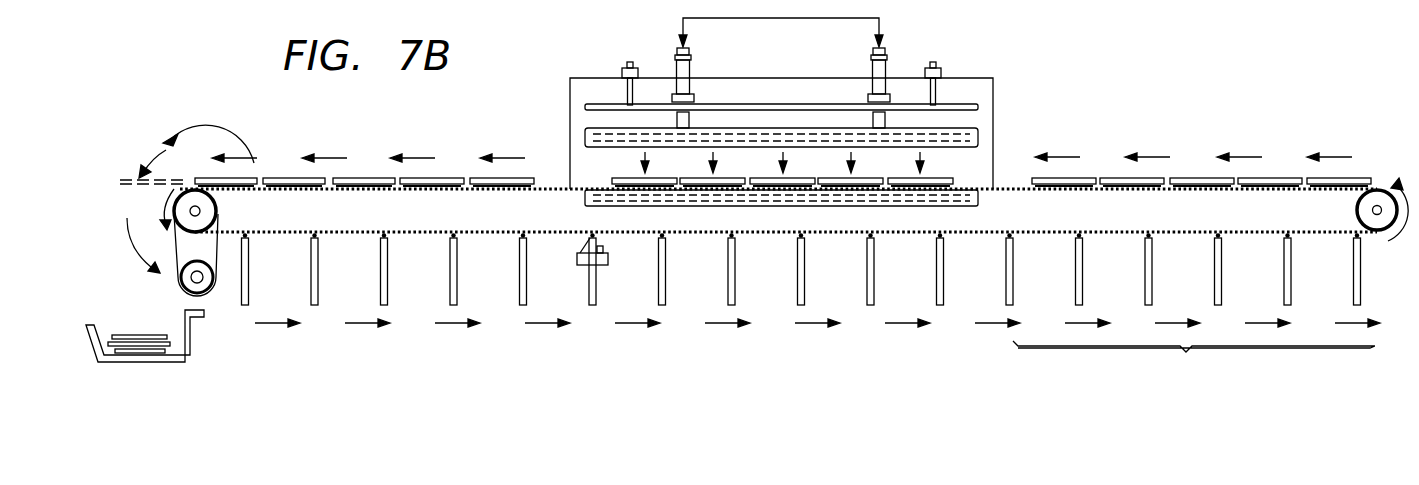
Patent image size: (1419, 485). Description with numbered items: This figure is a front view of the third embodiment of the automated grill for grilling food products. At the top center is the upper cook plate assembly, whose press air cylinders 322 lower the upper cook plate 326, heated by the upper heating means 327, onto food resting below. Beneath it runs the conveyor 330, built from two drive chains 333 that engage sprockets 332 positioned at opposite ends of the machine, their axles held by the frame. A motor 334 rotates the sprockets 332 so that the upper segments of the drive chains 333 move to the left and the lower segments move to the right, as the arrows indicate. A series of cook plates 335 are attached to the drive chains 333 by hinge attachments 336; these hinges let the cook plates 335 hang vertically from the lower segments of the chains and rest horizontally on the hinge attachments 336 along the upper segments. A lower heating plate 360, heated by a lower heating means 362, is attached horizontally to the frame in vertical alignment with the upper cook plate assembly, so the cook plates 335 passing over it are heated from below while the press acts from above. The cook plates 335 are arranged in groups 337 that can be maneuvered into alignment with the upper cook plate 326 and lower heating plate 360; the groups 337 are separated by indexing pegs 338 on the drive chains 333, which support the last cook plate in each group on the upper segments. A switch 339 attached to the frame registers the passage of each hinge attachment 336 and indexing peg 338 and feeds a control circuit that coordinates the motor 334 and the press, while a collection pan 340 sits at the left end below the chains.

The press air cylinders 322 is at (886, 68).
The upper cook plate 326 is at (587, 134).
The upper heating means 327 is at (585, 107).
The conveyor 330 is at (1390, 170).
The sprockets 332 is at (218, 210).
The drive chains 333 is at (975, 236).
The motor 334 is at (182, 281).
The cook plates 335 is at (314, 306).
The hinge attachments 336 is at (446, 242).
The groups 337 is at (1194, 362).
The indexing pegs 338 is at (592, 238).
The switch 339 is at (586, 267).
The collection pan 340 is at (191, 346).
The lower heating plate 360 is at (587, 200).
The lower heating means 362 is at (980, 198).